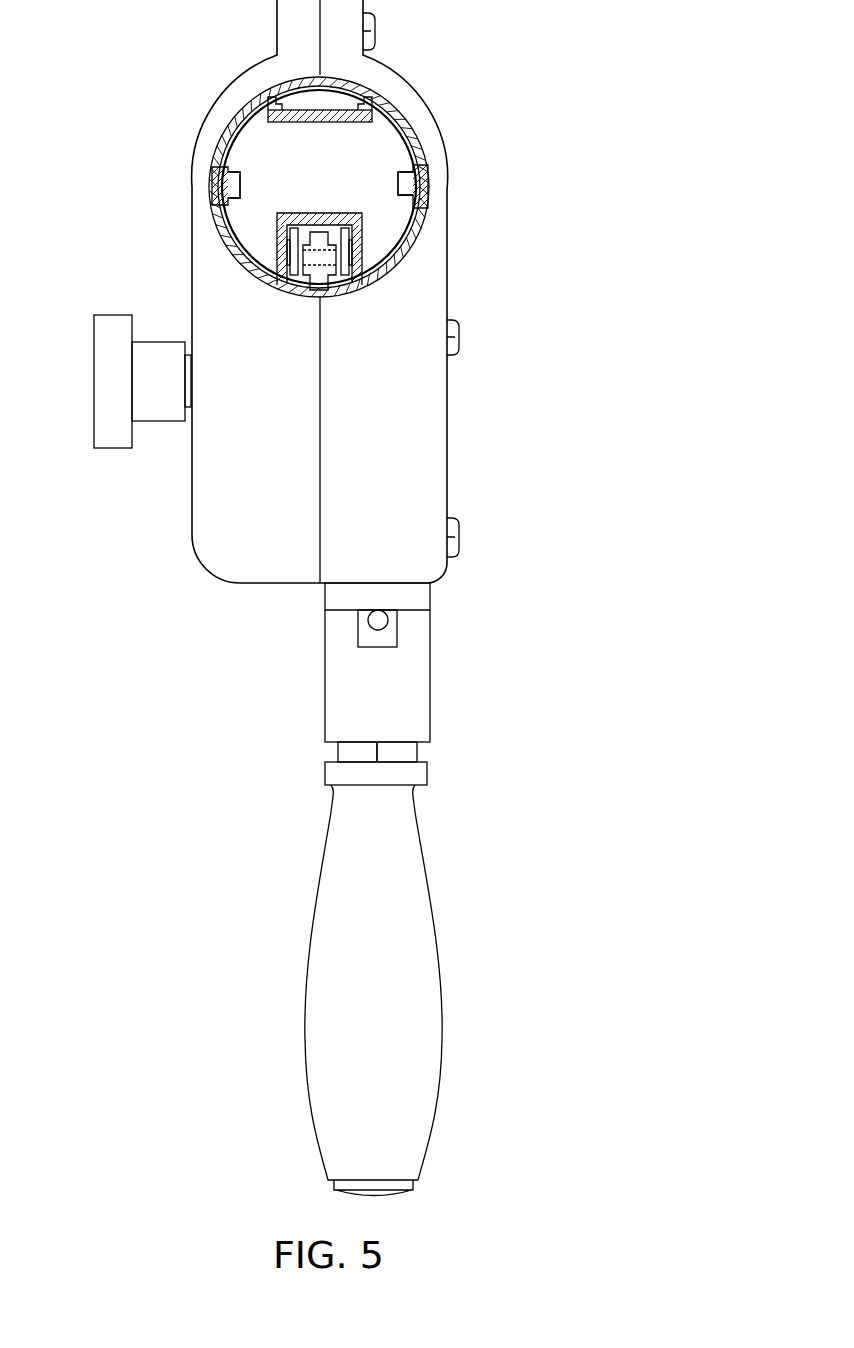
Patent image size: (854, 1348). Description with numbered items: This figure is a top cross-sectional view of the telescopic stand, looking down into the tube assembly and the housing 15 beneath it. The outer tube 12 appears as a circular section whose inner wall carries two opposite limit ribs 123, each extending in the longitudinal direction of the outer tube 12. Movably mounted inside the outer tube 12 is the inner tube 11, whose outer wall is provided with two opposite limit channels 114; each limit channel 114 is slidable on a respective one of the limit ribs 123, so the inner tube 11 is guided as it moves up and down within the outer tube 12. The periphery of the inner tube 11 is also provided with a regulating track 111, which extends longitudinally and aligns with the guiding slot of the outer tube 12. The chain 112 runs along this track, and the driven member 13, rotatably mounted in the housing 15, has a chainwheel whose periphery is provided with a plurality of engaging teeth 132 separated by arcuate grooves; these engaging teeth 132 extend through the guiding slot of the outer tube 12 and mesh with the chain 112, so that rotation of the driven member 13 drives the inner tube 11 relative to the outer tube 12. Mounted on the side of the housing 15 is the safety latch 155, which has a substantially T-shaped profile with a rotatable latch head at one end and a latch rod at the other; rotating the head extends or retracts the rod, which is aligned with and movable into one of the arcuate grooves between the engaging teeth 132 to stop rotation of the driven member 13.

The inner tube 11 is at (405, 120).
The outer tube 12 is at (235, 128).
The driven member 13 is at (372, 313).
The engaging teeth 132 is at (320, 267).
The housing 15 is at (447, 442).
The regulating track 111 is at (292, 268).
The chain 112 is at (345, 252).
The limit channels 114 is at (410, 184).
The limit ribs 123 is at (400, 186).
The safety latch 155 is at (118, 383).